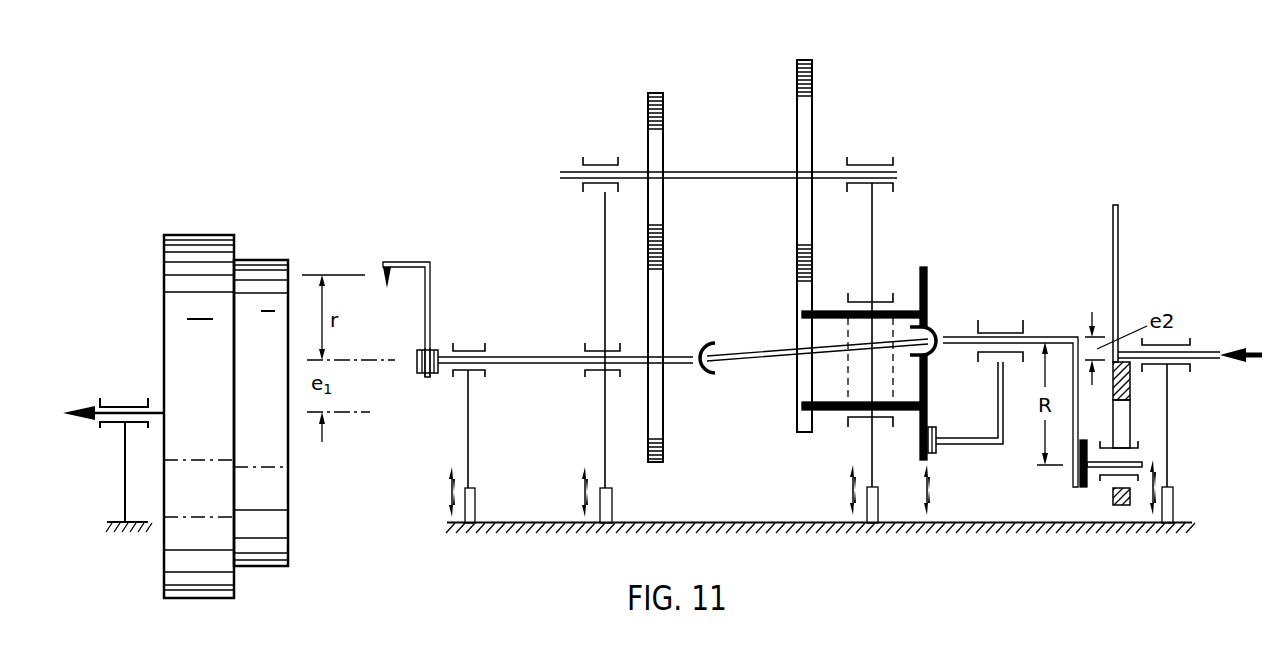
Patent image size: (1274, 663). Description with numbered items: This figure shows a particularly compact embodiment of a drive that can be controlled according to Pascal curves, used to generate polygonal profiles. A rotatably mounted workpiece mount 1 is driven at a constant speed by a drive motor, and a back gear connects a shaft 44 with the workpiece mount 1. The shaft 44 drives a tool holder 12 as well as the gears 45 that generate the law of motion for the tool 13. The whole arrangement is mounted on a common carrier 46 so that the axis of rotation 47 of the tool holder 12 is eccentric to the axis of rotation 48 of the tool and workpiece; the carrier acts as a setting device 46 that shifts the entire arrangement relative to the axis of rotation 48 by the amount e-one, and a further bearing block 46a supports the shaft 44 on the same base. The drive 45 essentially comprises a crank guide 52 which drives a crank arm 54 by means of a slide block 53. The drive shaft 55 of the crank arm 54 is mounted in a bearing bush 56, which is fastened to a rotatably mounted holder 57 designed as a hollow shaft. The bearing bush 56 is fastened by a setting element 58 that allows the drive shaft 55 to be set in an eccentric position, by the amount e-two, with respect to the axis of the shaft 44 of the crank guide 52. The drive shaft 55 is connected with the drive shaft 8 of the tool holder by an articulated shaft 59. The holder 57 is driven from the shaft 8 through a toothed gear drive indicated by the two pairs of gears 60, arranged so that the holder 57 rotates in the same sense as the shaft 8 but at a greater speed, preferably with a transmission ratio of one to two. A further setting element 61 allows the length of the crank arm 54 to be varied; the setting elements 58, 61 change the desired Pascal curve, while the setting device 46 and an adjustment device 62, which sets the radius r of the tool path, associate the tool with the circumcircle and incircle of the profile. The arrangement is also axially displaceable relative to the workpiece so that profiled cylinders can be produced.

The workpiece mount 1 is at (181, 253).
The drive shaft of the tool holder 8 is at (532, 356).
The tool holder 12 is at (431, 286).
The tool 13 is at (381, 268).
The shaft 44 is at (1208, 352).
The gears (drive) 45 is at (721, 82).
The common carrier (setting device) 46 is at (476, 500).
The bearing block 46a is at (1174, 507).
The axis of rotation of tool holder 47 is at (375, 358).
The axis of rotation of the tool (workpiece) 48 is at (352, 415).
The crank guide 52 is at (1119, 267).
The slide block 53 is at (1140, 447).
The crank arm 54 is at (1079, 393).
The drive shaft of crank arm 55 is at (1061, 336).
The bearing bush 56 is at (1010, 320).
The holder 57 is at (928, 283).
The setting element 58 is at (937, 432).
The articulated shaft 59 is at (756, 358).
The pairs of gears 60 is at (665, 262).
The setting element 61 is at (1078, 482).
The adjustment device 62 is at (417, 368).